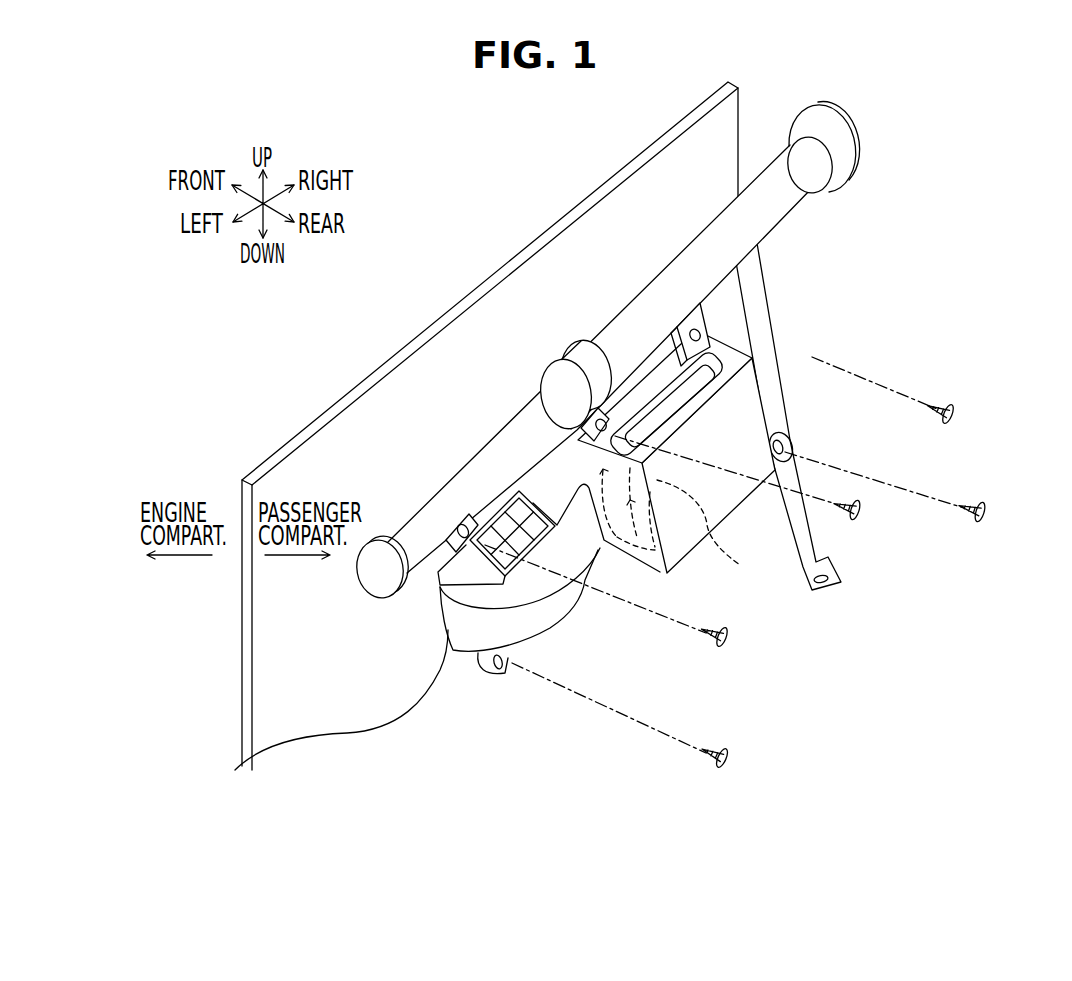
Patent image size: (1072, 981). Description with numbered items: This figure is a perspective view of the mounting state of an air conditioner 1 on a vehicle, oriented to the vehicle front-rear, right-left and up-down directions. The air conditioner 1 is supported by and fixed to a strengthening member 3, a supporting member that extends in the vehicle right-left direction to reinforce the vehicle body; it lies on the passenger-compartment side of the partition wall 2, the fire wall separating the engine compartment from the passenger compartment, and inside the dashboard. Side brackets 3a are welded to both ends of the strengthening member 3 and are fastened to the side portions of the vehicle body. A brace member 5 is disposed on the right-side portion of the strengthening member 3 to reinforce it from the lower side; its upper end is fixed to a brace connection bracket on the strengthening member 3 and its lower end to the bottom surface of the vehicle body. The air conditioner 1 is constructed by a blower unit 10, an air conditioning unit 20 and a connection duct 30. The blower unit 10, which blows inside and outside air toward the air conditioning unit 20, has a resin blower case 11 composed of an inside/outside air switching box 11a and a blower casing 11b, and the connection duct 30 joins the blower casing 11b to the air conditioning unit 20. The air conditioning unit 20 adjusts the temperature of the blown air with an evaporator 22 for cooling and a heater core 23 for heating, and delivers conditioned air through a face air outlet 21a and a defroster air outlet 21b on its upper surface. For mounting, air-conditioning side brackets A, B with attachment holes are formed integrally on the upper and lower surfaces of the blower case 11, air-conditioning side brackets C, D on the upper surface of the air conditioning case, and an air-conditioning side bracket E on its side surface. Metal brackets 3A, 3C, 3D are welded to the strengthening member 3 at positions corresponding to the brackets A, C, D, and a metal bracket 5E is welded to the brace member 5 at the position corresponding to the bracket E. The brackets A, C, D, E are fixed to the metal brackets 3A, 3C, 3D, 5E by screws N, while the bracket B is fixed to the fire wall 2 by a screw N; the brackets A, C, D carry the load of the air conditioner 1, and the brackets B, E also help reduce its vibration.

The air conditioner 1 is at (703, 660).
The partition wall (fire wall) 2 is at (345, 445).
The strengthening member 3 is at (777, 200).
The side bracket 3a is at (855, 157).
The metal bracket 3A is at (446, 538).
The metal bracket 3C is at (573, 372).
The metal bracket 3D is at (688, 318).
The brace member 5 is at (795, 416).
The metal bracket 5E is at (790, 420).
The blower unit 10 is at (564, 608).
The blower case 11 is at (507, 594).
The inside/outside air switching box 11a is at (437, 620).
The blower casing 11b is at (477, 637).
The air conditioning unit 20 is at (695, 468).
The face air outlet 21a is at (733, 357).
The defroster air outlet 21b is at (713, 344).
The evaporator 22 is at (712, 535).
The heater core 23 is at (663, 558).
The connection duct 30 is at (587, 563).
The air-conditioning side bracket A is at (480, 541).
The air-conditioning side bracket B is at (513, 672).
The air-conditioning side bracket C is at (607, 420).
The air-conditioning side bracket D is at (700, 312).
The air-conditioning side bracket E is at (792, 442).
The screw N is at (957, 411).